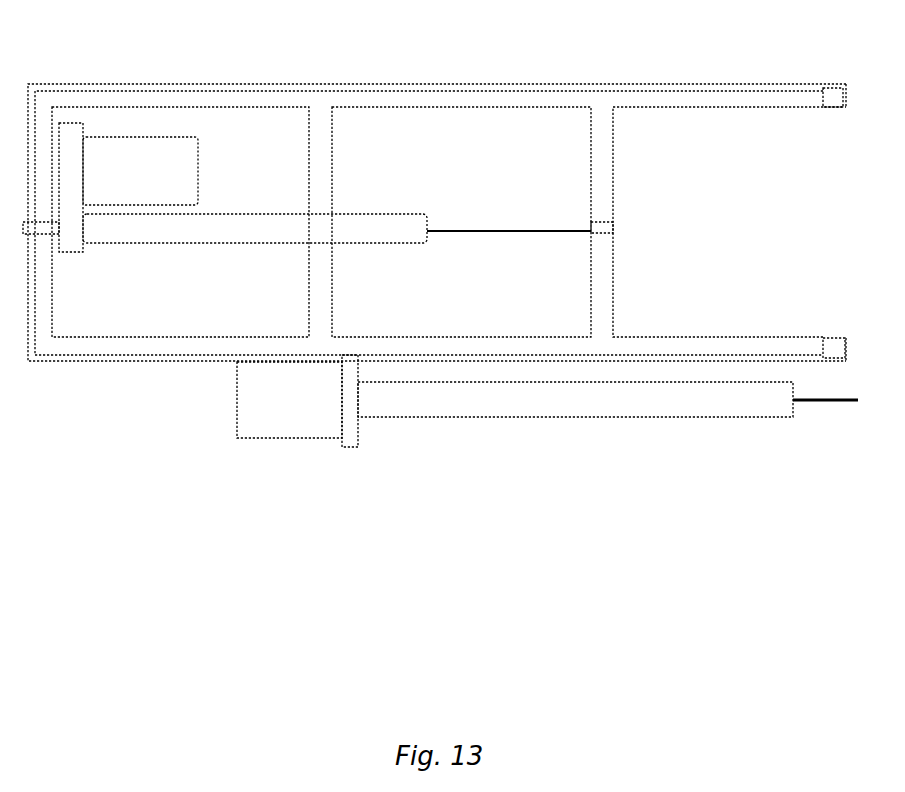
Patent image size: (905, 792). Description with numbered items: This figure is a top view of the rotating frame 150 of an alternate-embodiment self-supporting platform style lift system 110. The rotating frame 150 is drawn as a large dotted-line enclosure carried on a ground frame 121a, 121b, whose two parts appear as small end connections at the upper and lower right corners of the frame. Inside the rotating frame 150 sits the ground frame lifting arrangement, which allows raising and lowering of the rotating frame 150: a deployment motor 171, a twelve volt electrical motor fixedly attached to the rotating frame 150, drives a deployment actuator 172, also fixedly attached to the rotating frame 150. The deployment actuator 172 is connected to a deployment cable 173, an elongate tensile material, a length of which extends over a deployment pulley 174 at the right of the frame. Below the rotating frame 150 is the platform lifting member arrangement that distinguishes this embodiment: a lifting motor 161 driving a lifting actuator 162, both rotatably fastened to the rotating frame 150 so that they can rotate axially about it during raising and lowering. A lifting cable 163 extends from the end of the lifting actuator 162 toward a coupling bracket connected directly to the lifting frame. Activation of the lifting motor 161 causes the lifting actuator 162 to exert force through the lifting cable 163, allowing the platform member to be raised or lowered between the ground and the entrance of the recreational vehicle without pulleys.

The self-supporting platform style lift system 110 is at (745, 640).
The ground frame 121a is at (835, 340).
The ground frame 121b is at (834, 92).
The rotating frame 150 is at (137, 348).
The lifting motor 161 is at (295, 402).
The lifting actuator 162 is at (531, 410).
The lifting cable 163 is at (835, 410).
The deployment motor 171 is at (137, 175).
The deployment actuator 172 is at (125, 237).
The deployment cable 173 is at (472, 231).
The deployment pulley 174 is at (615, 228).